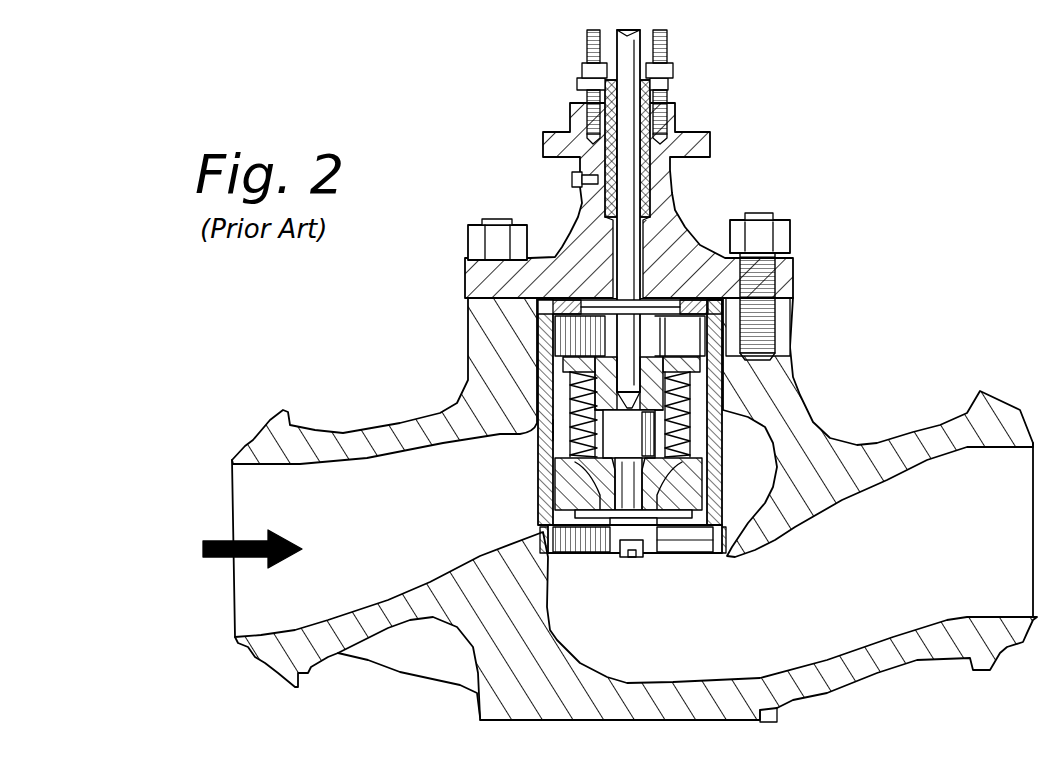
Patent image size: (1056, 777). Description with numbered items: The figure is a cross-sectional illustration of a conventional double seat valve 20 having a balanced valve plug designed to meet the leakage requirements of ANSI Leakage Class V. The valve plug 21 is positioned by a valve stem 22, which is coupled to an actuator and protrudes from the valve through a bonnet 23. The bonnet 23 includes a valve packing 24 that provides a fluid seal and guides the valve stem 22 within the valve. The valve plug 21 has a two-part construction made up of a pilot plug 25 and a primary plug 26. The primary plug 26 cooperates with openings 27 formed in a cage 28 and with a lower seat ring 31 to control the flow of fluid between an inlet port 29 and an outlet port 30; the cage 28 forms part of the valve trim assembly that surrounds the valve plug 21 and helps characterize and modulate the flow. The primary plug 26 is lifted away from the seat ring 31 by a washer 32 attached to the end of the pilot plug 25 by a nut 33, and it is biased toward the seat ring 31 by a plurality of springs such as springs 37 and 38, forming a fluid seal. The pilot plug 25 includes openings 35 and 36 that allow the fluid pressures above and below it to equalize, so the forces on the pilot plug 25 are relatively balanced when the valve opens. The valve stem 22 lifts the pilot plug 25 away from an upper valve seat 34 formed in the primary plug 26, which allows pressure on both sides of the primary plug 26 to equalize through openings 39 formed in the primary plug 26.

The double seat valve 20 is at (882, 284).
The valve plug 21 is at (663, 445).
The valve stem 22 is at (659, 37).
The bonnet 23 is at (690, 222).
The valve packing 24 is at (652, 172).
The pilot plug 25 is at (658, 356).
The primary plug 26 is at (778, 462).
The openings 27 is at (718, 500).
The cage 28 is at (540, 462).
The inlet port 29 is at (330, 591).
The outlet port 30 is at (995, 576).
The lower seat ring 31 is at (722, 547).
The washer 32 is at (655, 524).
The nut 33 is at (637, 557).
The upper valve seat 34 is at (580, 557).
The opening 35 is at (577, 358).
The opening 36 is at (714, 360).
The spring 37 is at (549, 430).
The spring 38 is at (700, 435).
The openings 39 is at (670, 518).